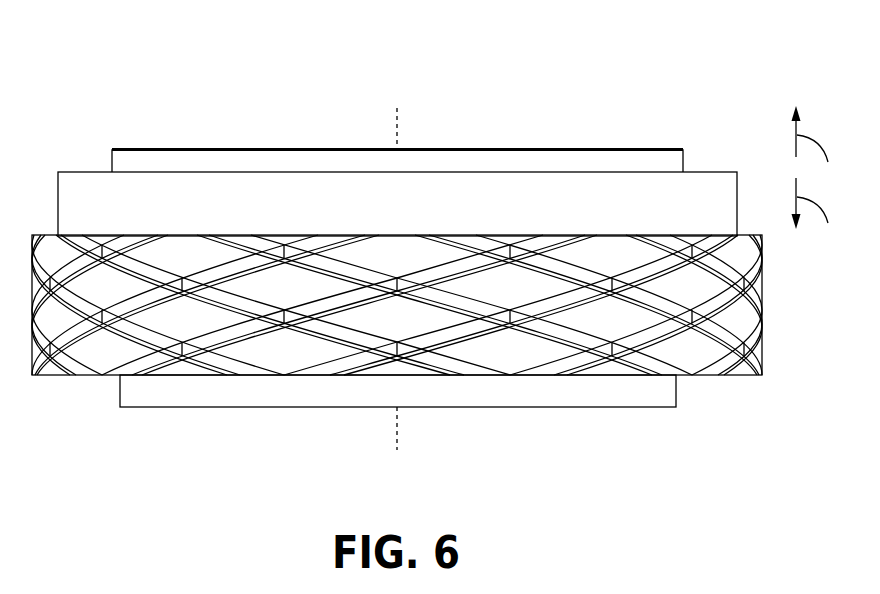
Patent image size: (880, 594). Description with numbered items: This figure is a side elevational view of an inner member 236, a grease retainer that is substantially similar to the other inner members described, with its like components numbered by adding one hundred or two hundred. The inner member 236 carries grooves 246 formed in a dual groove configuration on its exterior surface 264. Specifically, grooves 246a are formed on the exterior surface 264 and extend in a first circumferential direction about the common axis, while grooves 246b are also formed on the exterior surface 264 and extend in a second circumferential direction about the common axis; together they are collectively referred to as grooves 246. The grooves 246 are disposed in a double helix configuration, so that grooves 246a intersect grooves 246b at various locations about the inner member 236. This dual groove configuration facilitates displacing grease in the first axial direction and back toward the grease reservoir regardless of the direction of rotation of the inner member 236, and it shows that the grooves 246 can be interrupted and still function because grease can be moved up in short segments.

The inner member 236 is at (192, 80).
The grooves 246 is at (121, 352).
The grooves 246a is at (232, 300).
The grooves 246b is at (368, 295).
The exterior surface 264 is at (690, 298).